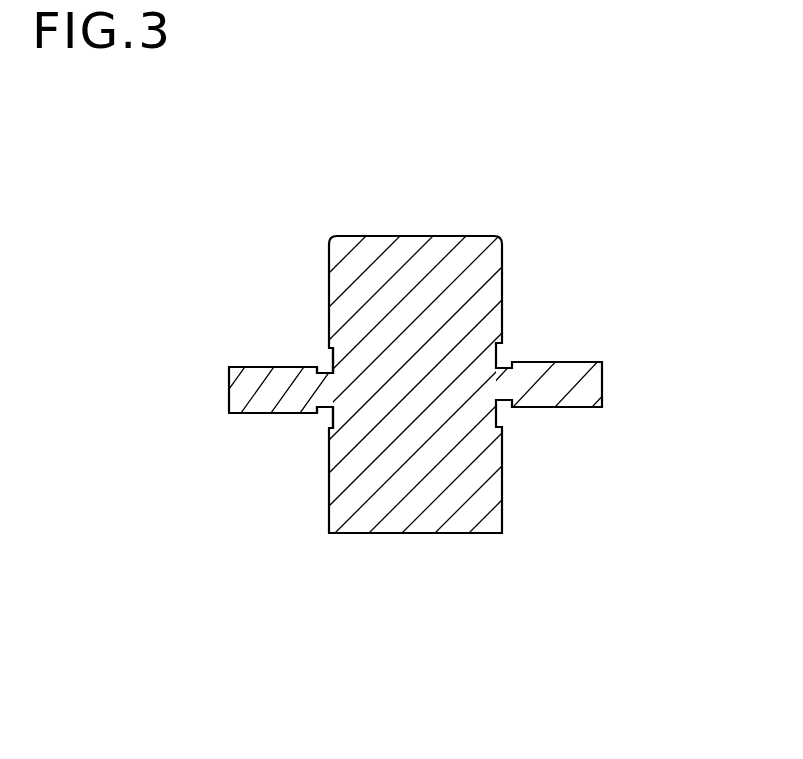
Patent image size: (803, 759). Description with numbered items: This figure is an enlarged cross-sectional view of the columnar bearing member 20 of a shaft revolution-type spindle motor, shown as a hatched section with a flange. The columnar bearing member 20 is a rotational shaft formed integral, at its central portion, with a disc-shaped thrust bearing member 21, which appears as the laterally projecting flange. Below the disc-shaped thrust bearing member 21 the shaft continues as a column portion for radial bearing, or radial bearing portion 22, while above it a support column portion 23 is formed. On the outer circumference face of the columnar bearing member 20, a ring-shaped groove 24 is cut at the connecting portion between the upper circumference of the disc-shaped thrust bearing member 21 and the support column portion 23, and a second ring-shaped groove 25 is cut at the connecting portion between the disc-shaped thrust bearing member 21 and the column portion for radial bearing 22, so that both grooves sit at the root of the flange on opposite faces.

The columnar bearing member 20 is at (413, 243).
The disc-shaped thrust bearing member 21 is at (587, 382).
The column portion for radial bearing 22 is at (487, 463).
The support column portion 23 is at (487, 297).
The ring-shaped groove 24 is at (321, 358).
The ring-shaped groove 25 is at (326, 426).